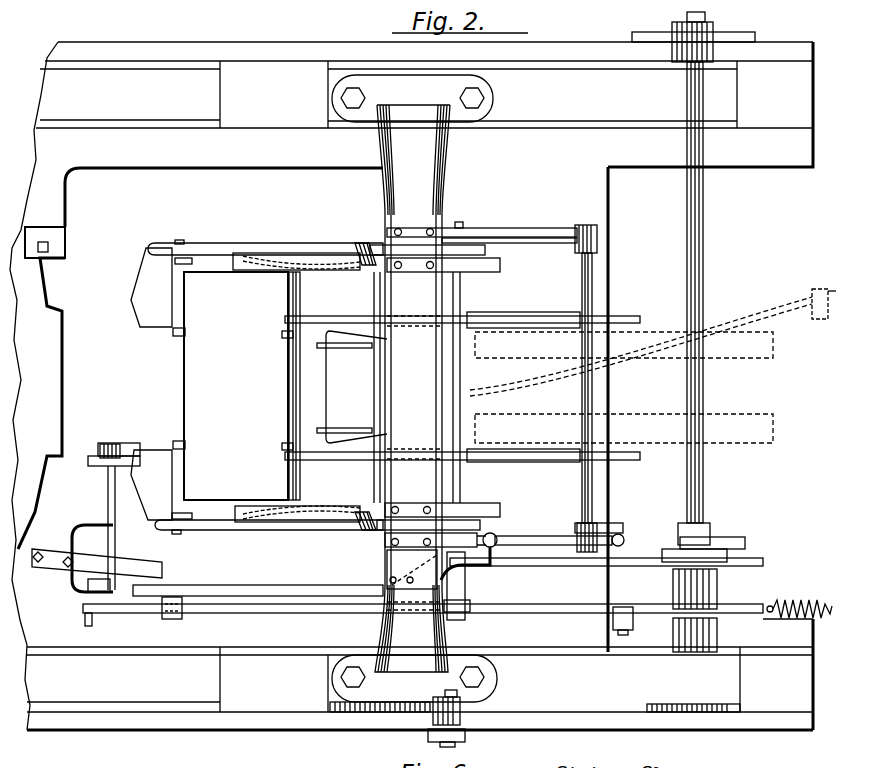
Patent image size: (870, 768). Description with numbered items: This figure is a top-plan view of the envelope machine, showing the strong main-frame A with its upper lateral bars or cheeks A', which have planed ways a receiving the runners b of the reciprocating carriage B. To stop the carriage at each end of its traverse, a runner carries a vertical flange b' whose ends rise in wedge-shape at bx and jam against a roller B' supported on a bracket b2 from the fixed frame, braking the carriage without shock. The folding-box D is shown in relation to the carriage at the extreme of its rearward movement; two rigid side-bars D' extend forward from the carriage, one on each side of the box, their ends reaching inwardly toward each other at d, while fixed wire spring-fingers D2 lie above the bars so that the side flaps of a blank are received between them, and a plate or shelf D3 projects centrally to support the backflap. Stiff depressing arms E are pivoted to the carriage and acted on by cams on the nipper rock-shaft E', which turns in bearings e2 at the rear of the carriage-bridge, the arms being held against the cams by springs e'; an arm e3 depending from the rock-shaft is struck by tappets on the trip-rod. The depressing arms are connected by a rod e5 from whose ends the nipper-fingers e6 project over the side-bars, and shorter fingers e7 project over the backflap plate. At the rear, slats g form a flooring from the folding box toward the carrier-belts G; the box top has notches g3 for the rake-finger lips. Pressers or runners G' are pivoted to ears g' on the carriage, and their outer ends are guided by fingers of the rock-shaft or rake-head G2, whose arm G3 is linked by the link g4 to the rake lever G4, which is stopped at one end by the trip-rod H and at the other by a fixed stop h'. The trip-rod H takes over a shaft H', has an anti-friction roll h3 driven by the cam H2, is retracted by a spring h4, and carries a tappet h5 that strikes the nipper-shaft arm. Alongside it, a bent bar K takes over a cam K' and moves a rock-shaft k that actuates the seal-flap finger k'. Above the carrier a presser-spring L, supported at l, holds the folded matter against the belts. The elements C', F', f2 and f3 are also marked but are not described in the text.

The main-frame A is at (313, 401).
The upper lateral bars or cheeks A' is at (420, 405).
The planed ways a is at (710, 386).
The runners b is at (543, 367).
The wedge-shaped ends of flange bx is at (368, 712).
The reciprocating carriage B is at (412, 388).
The roller B' is at (474, 703).
The vertical flange b' is at (542, 694).
The bracket b2 is at (452, 746).
The slide plate C' is at (523, 375).
The folding-box D is at (236, 386).
The rigid arms or side-bars D' is at (265, 386).
The spring-fingers D2 is at (210, 253).
The plate or shelf D3 is at (356, 387).
The inward-reaching ends of side-bars d is at (151, 384).
The depressing arms E is at (301, 366).
The nipper rock-shaft E' is at (492, 427).
The springs e' is at (438, 368).
The bearings e2 is at (470, 228).
The arm e3 is at (455, 620).
The rod e5 is at (373, 298).
The nipper-fingers e6 is at (260, 254).
The shorter fingers e7 is at (322, 348).
The clip F' is at (191, 388).
The pin f2 is at (147, 252).
The pin f3 is at (172, 258).
The carrier-belts G is at (624, 393).
The pressers or runners G' is at (624, 345).
The rock-shaft or rake-head G2 is at (595, 262).
The arm G3 is at (622, 531).
The rake lever G4 is at (486, 566).
The slats g is at (462, 389).
The ears g' is at (470, 387).
The slots, notches or mortises g3 is at (185, 333).
The link g4 is at (540, 536).
The trip-rod H is at (423, 603).
The shaft H' is at (704, 267).
The cam H2 is at (745, 622).
The fixed stop h' is at (97, 558).
The anti-friction roll h3 is at (623, 606).
The spring h4 is at (788, 600).
The tappet h5 is at (440, 612).
The bent bar K is at (466, 568).
The cam K' is at (727, 536).
The rock-shaft k is at (88, 528).
The finger k' is at (114, 442).
The presser-spring L is at (735, 320).
The support l is at (812, 290).